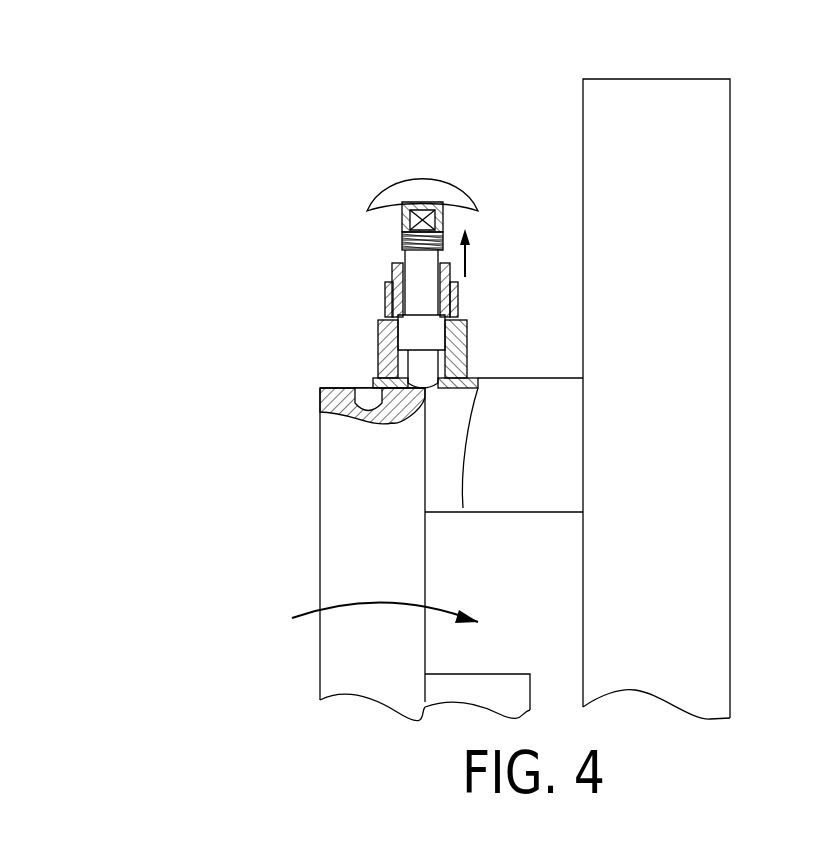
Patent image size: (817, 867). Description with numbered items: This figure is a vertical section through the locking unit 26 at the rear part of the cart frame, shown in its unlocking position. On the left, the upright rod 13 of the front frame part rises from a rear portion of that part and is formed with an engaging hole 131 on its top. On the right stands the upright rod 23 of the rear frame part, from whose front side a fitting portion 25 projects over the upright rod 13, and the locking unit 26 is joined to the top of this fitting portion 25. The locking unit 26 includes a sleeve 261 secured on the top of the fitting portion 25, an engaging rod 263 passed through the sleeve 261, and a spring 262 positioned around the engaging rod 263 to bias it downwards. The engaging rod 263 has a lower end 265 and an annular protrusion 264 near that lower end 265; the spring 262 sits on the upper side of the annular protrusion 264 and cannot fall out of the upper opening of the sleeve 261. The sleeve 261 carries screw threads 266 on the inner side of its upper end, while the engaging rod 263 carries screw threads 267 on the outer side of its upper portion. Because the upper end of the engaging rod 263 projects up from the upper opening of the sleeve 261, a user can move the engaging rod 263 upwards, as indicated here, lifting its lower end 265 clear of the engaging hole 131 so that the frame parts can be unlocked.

The upright rod 13 is at (292, 551).
The engaging hole 131 is at (365, 398).
The upright rod 23 is at (702, 232).
The fitting portion 25 is at (452, 473).
The locking unit 26 is at (324, 216).
The sleeve 261 is at (395, 297).
The spring 262 is at (390, 287).
The engaging rod 263 is at (421, 175).
The annular protrusion 264 is at (405, 325).
The lower end 265 is at (418, 372).
The screw threads 266 is at (405, 256).
The screw threads 267 is at (402, 238).